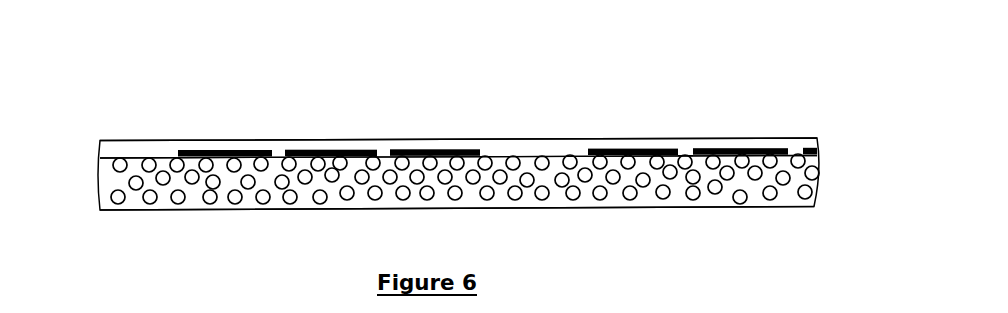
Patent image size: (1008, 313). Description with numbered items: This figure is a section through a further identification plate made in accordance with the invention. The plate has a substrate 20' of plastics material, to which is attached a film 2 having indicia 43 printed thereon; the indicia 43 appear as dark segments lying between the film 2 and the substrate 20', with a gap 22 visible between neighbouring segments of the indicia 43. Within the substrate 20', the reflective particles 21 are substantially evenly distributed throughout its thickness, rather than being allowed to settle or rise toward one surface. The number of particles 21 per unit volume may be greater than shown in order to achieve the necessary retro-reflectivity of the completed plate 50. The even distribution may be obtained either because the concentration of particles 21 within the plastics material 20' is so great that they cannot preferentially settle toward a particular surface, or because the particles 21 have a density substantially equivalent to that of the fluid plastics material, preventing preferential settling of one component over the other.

The film 2 is at (120, 148).
The substrate 20' is at (420, 182).
The reflective particles 21 is at (693, 195).
The gap between conductive segments 22 is at (685, 153).
The indicia 43 is at (252, 151).
The completed plate 50 is at (377, 132).